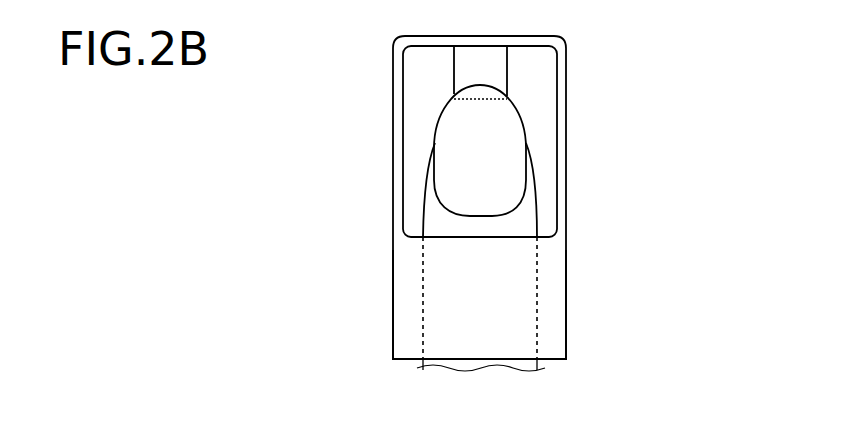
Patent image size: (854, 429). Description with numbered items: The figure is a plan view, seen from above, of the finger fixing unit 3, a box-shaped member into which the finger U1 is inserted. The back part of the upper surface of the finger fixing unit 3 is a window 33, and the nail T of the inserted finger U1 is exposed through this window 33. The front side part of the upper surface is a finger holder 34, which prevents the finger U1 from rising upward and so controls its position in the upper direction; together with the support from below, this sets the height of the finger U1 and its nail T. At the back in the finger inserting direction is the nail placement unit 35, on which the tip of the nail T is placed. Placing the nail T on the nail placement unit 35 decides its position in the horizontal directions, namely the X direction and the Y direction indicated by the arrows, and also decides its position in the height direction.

The finger fixing unit 3 is at (390, 304).
The window 33 is at (545, 90).
The finger holder 34 is at (554, 317).
The nail placement unit 35 is at (497, 63).
The nail T is at (503, 173).
The finger U1 is at (529, 218).
The X direction X is at (539, 384).
The Y direction Y is at (365, 98).